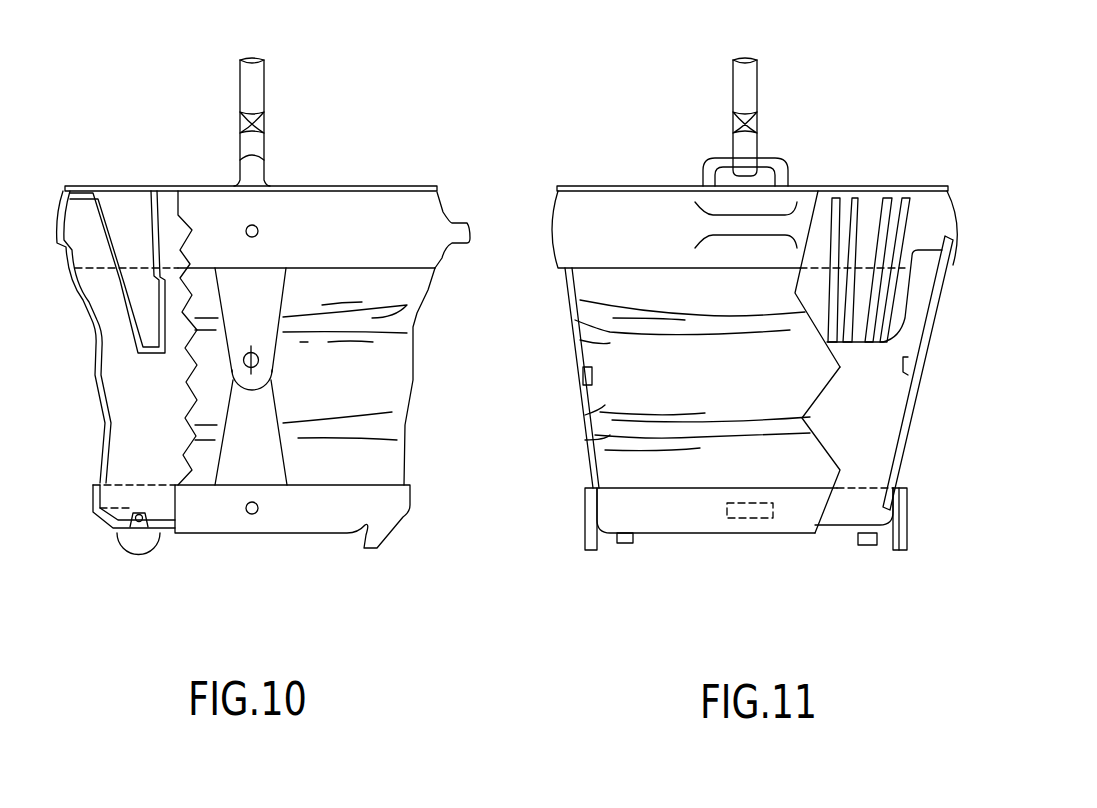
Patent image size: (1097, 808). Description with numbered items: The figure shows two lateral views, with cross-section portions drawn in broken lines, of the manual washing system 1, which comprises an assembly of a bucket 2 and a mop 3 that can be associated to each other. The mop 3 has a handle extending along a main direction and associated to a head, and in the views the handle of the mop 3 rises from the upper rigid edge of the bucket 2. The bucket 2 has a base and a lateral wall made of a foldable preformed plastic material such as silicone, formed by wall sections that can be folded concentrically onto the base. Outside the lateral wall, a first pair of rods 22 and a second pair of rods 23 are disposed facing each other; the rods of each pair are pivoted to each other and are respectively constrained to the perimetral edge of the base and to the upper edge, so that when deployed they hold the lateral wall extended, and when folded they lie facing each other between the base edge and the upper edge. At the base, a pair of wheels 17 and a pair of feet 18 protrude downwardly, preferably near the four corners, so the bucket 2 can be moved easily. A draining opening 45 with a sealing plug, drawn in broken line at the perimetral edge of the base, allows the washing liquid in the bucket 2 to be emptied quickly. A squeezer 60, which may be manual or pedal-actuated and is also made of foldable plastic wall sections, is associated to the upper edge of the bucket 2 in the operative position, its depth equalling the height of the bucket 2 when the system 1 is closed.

In FIG. 10, the manual washing system 1 is at (180, 115).
In FIG. 11, the manual washing system 1 is at (620, 118).
In FIG. 10, the bucket 2 is at (435, 405).
In FIG. 11, the bucket 2 is at (572, 458).
In FIG. 10, the mop 3 is at (290, 78).
In FIG. 11, the mop 3 is at (782, 78).
In FIG. 11, the wheels 17 is at (905, 540).
In FIG. 11, the feet 18 is at (625, 543).
In FIG. 10, the first pair of rods 22 is at (258, 446).
In FIG. 11, the first pair of rods 22 is at (572, 292).
In FIG. 11, the second pair of rods 23 is at (923, 337).
In FIG. 11, the draining opening 45 is at (752, 518).
In FIG. 10, the squeezer 60 is at (110, 205).
In FIG. 11, the squeezer 60 is at (928, 208).